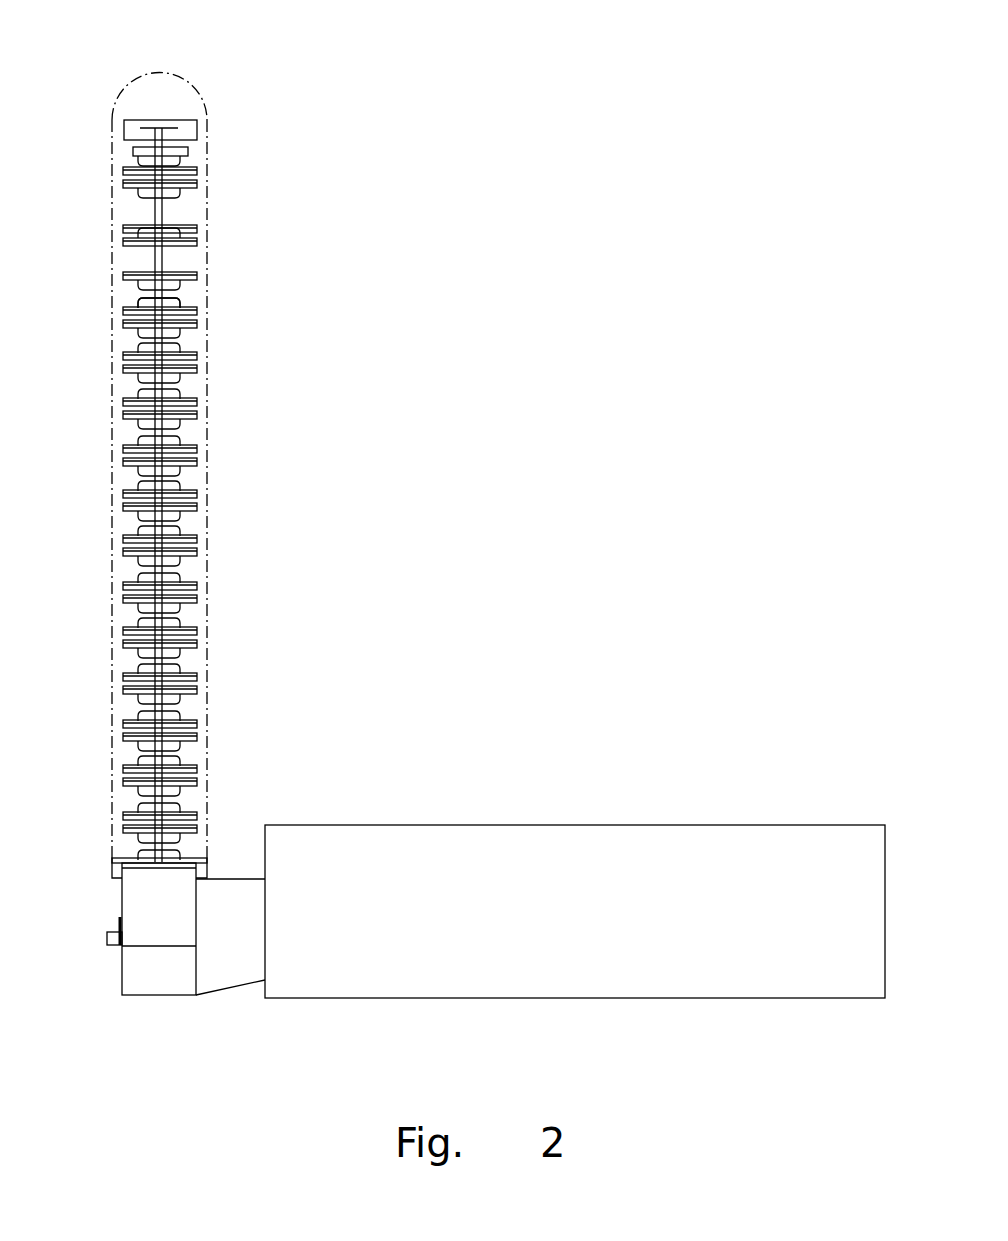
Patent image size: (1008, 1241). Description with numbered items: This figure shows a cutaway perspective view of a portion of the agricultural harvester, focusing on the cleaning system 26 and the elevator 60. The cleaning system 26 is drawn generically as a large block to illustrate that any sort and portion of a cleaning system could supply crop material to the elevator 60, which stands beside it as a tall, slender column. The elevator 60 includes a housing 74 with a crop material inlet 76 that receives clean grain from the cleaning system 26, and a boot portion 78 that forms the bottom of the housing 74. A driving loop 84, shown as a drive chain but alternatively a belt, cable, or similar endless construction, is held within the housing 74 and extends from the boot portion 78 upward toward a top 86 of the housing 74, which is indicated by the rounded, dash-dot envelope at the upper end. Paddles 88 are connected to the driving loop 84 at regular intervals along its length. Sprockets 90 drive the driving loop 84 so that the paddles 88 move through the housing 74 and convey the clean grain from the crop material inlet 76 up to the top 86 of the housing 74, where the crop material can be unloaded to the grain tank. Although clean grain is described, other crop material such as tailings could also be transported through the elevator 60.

The cleaning system 26 is at (643, 1003).
The elevator 60 is at (240, 555).
The housing 74 is at (207, 226).
The crop material inlet 76 is at (228, 985).
The boot portion 78 is at (157, 995).
The driving loop 84 is at (140, 296).
The top 86 is at (173, 75).
The paddles 88 is at (143, 402).
The sprockets 90 is at (133, 151).